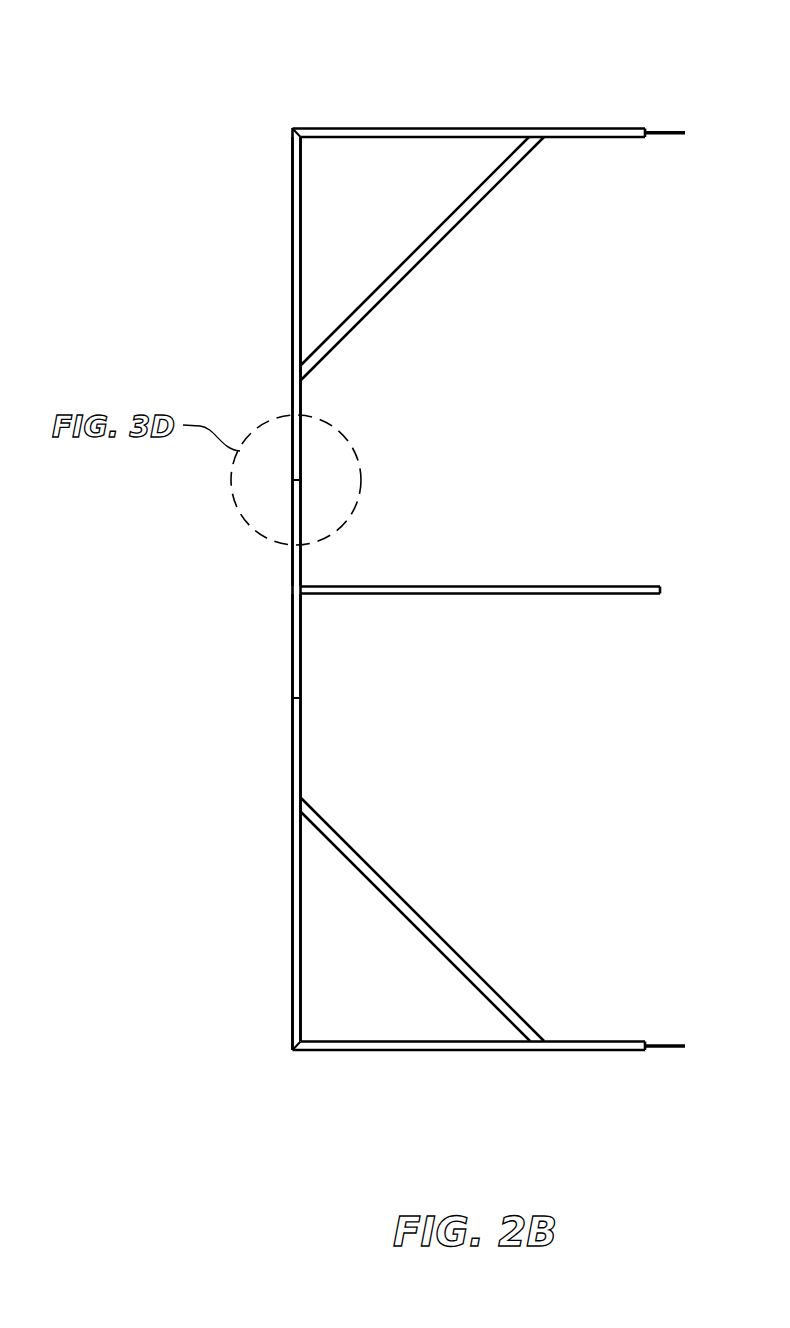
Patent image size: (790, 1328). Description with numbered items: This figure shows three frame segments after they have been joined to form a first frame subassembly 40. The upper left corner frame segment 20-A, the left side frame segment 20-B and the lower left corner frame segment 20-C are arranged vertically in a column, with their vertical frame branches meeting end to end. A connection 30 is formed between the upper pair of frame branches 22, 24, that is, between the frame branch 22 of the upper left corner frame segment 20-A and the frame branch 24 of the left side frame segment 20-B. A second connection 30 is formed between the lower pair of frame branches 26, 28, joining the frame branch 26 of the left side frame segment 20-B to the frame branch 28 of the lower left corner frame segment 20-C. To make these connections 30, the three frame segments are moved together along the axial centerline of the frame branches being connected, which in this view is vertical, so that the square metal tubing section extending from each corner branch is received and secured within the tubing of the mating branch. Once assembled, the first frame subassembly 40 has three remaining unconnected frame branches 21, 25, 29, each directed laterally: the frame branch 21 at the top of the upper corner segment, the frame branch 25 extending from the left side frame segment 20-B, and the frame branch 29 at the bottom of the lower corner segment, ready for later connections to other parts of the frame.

The first frame subassembly 40 is at (442, 96).
The upper left corner frame segment 20-A is at (220, 139).
The left side frame segment 20-B is at (220, 575).
The lower left corner frame segment 20-C is at (220, 858).
The frame branch 21 is at (590, 127).
The frame branch 22 is at (292, 398).
The frame branch 24 is at (302, 568).
The frame branch 25 is at (588, 586).
The frame branch 26 is at (302, 610).
The frame branch 28 is at (292, 760).
The frame branch 29 is at (588, 1041).
The connection 30 is at (320, 476).